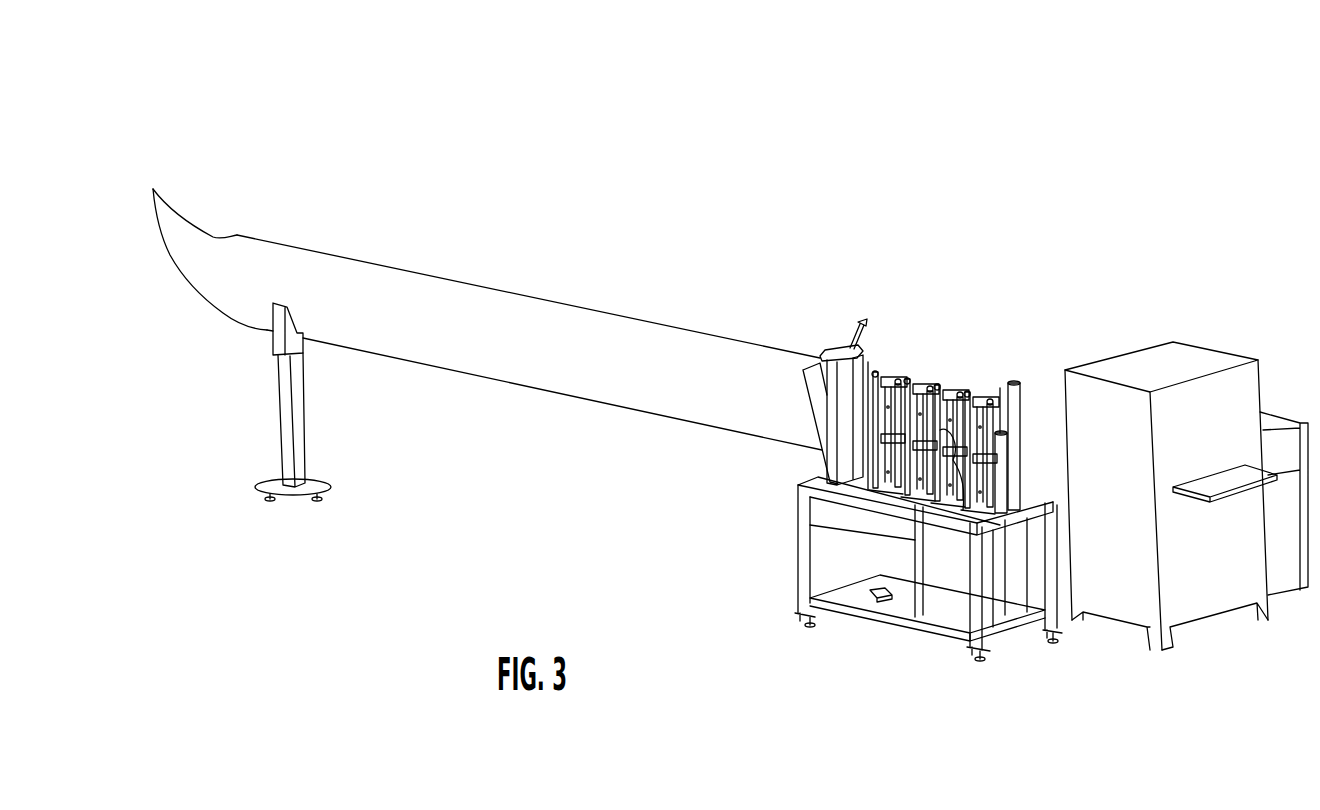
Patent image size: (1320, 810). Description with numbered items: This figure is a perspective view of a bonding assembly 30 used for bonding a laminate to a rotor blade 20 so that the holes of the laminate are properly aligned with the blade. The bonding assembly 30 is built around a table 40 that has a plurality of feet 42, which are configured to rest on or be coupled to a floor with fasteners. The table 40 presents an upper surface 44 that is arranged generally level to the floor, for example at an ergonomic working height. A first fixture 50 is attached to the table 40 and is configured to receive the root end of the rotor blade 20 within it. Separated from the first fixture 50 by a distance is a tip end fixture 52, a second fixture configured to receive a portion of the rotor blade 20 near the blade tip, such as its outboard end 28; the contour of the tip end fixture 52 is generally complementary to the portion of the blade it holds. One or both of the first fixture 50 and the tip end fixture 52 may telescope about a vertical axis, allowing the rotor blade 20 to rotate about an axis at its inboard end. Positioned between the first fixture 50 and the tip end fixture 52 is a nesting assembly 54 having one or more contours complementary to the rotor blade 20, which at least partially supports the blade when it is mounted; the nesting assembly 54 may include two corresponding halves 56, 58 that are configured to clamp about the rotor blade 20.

The rotor blade 20 is at (612, 335).
The outboard end 28 is at (170, 255).
The bonding assembly 30 is at (845, 112).
The table 40 is at (797, 533).
The feet 42 is at (812, 628).
The upper surface 44 is at (852, 488).
The first fixture 50 is at (959, 340).
The tip end fixture 52 is at (306, 397).
The nesting assembly 54 is at (875, 331).
The first half of nesting assembly 56 is at (837, 383).
The second half of nesting assembly 58 is at (858, 368).